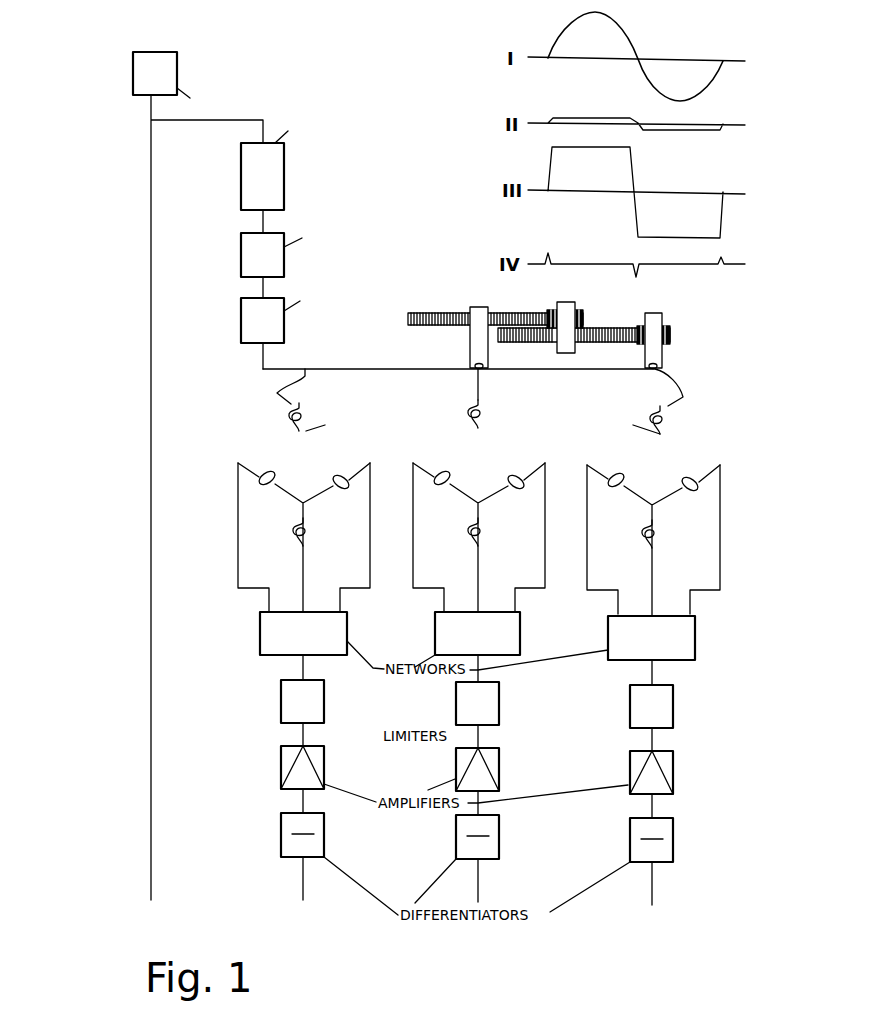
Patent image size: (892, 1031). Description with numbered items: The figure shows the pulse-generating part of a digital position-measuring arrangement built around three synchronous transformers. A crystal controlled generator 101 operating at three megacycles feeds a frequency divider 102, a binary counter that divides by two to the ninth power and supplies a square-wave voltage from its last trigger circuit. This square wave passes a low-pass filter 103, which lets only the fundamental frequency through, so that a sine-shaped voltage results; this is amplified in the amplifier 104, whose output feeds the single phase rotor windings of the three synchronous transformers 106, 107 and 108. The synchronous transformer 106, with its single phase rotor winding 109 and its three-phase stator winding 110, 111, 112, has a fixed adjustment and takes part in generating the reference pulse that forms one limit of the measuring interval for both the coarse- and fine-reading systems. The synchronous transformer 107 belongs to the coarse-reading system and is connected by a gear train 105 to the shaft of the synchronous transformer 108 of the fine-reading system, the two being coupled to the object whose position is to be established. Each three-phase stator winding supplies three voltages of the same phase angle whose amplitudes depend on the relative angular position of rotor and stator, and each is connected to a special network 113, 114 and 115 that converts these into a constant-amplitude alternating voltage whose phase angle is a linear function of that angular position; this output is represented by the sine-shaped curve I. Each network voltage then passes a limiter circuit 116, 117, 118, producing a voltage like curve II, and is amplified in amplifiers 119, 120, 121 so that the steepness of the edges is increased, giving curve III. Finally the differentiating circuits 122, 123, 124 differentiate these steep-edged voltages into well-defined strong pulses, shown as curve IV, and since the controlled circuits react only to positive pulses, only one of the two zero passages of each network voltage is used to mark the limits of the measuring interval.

The crystal controlled generator 101 is at (203, 80).
The frequency divider 102 is at (292, 166).
The low-pass filter 103 is at (294, 253).
The amplifier 104 is at (305, 317).
The gear train 105 is at (539, 328).
The synchronous transformer 106 is at (272, 440).
The synchronous transformer 107 is at (454, 440).
The synchronous transformer 108 is at (621, 444).
The single phase rotor winding 109 is at (346, 415).
The three-phase stator winding 110 is at (265, 490).
The three-phase stator winding 111 is at (349, 492).
The three-phase stator winding 112 is at (319, 532).
The network 113 is at (322, 640).
The network 114 is at (467, 639).
The network 115 is at (582, 643).
The limiter circuit 116 is at (322, 701).
The limiter circuit 117 is at (497, 703).
The limiter circuit 118 is at (672, 706).
The amplifier 119 is at (328, 774).
The amplifier 120 is at (483, 769).
The amplifier 121 is at (591, 777).
The differentiating circuit 122 is at (339, 864).
The differentiating circuit 123 is at (477, 859).
The differentiating circuit 124 is at (632, 865).